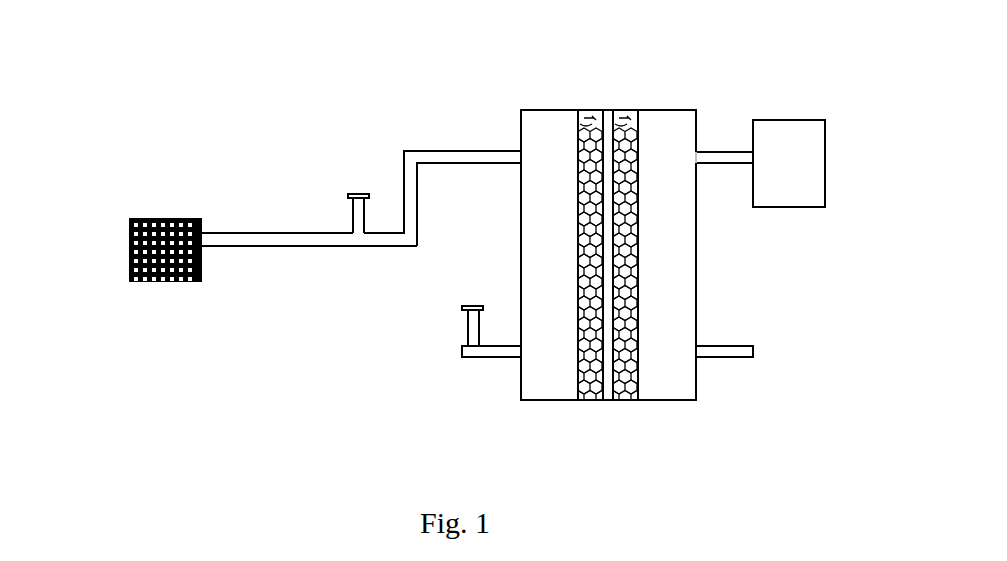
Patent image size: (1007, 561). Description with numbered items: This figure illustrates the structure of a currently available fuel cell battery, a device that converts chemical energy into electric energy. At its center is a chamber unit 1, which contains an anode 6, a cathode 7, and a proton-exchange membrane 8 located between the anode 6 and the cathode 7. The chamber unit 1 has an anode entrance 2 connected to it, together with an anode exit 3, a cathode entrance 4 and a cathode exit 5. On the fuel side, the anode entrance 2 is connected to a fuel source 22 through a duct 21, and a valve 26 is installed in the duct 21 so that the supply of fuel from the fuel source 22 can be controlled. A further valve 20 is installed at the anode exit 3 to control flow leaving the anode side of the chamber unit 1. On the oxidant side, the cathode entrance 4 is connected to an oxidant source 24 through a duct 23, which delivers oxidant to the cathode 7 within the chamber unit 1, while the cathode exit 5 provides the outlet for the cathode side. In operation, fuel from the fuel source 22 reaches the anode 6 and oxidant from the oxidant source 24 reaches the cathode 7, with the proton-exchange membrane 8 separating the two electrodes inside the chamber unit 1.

The chamber unit 1 is at (671, 130).
The anode entrance 2 is at (519, 151).
The anode exit 3 is at (519, 343).
The cathode entrance 4 is at (698, 164).
The cathode exit 5 is at (699, 349).
The anode 6 is at (588, 109).
The cathode 7 is at (627, 109).
The proton-exchange membrane 8 is at (607, 128).
The valve 20 is at (479, 305).
The duct 21 is at (310, 248).
The fuel source 22 is at (131, 230).
The duct 23 is at (717, 147).
The oxidant source 24 is at (793, 208).
The valve 26 is at (360, 193).